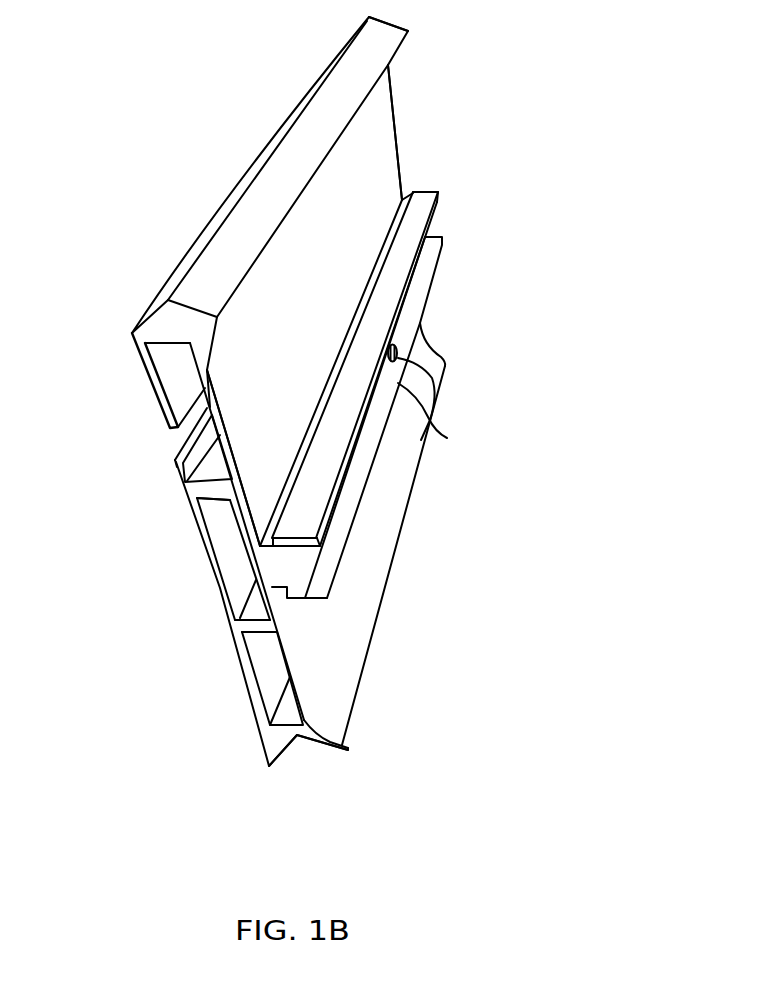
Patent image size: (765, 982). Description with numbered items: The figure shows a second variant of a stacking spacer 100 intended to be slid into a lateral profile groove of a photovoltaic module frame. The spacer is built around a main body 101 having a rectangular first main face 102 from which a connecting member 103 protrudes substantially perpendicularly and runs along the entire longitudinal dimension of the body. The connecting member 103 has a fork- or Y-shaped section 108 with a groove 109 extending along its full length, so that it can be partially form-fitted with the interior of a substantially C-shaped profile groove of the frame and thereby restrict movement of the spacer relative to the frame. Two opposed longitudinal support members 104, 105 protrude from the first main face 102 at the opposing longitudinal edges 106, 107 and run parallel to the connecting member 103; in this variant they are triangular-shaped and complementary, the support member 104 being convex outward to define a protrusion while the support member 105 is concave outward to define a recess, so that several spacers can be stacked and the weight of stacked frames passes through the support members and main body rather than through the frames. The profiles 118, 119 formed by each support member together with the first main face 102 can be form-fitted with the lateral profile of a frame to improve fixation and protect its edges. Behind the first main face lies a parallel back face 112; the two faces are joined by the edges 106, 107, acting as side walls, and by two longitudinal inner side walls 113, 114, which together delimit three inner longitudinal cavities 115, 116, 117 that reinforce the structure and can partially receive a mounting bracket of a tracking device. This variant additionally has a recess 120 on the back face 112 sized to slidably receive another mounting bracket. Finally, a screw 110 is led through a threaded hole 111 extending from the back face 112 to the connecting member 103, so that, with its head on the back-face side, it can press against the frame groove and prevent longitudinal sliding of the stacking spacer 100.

The stacking spacer 100 is at (562, 202).
The main body 101 is at (364, 188).
The first main face 102 is at (345, 294).
The connecting member 103 is at (320, 480).
The longitudinal support member 104 is at (293, 137).
The longitudinal support member 105 is at (295, 737).
The longitudinal edge 106 is at (198, 344).
The longitudinal edge 107 is at (348, 748).
The Y-shaped section 108 is at (277, 572).
The groove 109 is at (310, 567).
The screw 110 is at (400, 358).
The threaded hole 111 is at (391, 384).
The back face 112 is at (165, 428).
The longitudinal inner side wall 113 is at (215, 495).
The longitudinal inner side wall 114 is at (257, 630).
The inner longitudinal cavity 115 is at (170, 372).
The inner longitudinal cavity 116 is at (228, 581).
The inner longitudinal cavity 117 is at (262, 692).
The profile 118 is at (230, 348).
The profile 119 is at (338, 705).
The recess 120 is at (168, 459).